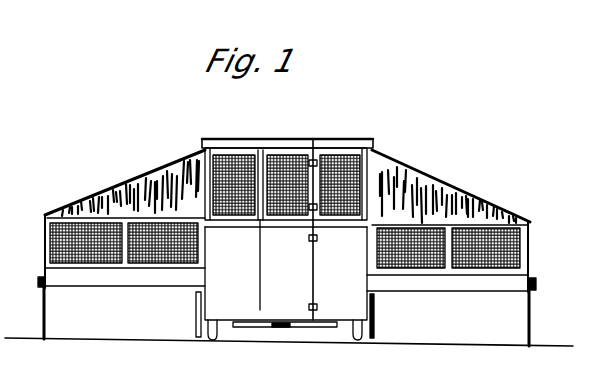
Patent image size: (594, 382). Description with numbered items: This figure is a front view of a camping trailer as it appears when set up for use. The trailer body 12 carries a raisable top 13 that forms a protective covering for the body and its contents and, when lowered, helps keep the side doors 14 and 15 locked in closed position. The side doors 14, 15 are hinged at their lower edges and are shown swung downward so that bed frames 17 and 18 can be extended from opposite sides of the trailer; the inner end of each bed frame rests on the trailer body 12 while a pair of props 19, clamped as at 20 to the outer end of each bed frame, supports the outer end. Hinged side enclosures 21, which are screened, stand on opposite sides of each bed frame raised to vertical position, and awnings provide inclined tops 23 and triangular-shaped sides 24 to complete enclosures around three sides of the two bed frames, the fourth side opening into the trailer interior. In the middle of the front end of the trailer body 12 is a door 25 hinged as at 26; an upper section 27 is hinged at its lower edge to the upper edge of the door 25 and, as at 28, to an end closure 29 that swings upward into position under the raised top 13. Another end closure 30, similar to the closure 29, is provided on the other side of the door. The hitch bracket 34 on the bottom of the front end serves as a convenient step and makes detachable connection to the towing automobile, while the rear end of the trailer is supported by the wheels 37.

The trailer body 12 is at (286, 273).
The raisable top 13 is at (343, 142).
The side door 14 is at (375, 322).
The side door 15 is at (197, 317).
The bed frame 17 is at (465, 290).
The bed frame 18 is at (97, 287).
The props 19 is at (40, 312).
The clamp 20 is at (38, 280).
The hinged side enclosures 21 is at (45, 238).
The inclined tops 23 is at (450, 188).
The triangular-shaped sides 24 is at (418, 178).
The door 25 is at (265, 252).
The door hinge 26 is at (316, 238).
The upper section 27 is at (291, 157).
The hinge 28 is at (313, 162).
The end closure 29 is at (381, 158).
The end closure 30 is at (235, 160).
The hitch bracket 34 is at (272, 322).
The wheels 37 is at (353, 335).